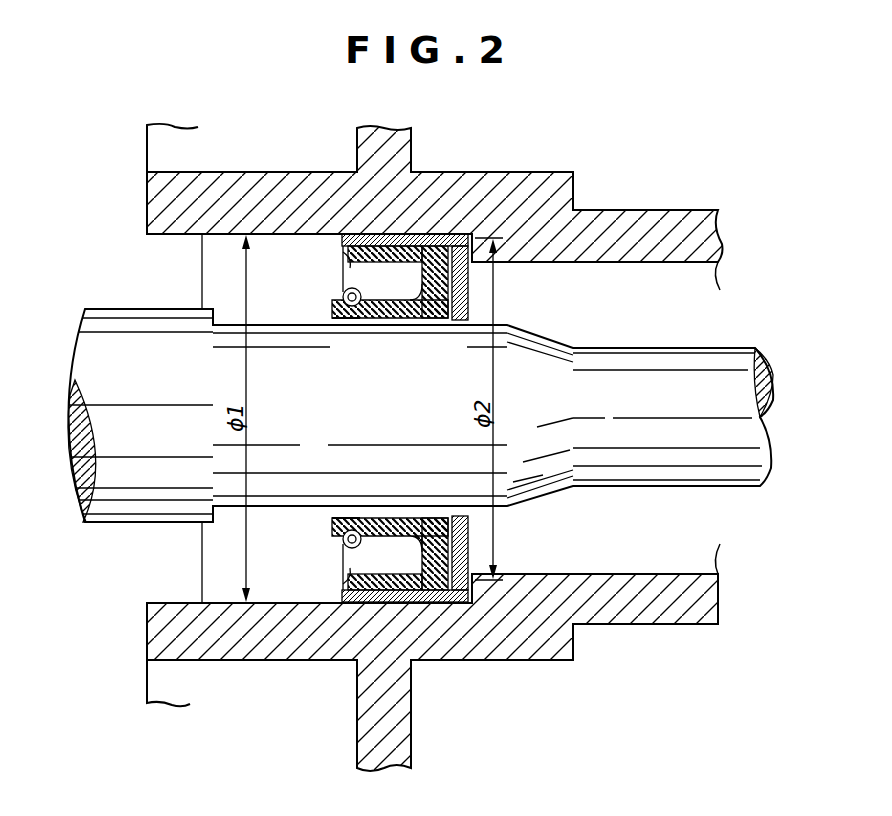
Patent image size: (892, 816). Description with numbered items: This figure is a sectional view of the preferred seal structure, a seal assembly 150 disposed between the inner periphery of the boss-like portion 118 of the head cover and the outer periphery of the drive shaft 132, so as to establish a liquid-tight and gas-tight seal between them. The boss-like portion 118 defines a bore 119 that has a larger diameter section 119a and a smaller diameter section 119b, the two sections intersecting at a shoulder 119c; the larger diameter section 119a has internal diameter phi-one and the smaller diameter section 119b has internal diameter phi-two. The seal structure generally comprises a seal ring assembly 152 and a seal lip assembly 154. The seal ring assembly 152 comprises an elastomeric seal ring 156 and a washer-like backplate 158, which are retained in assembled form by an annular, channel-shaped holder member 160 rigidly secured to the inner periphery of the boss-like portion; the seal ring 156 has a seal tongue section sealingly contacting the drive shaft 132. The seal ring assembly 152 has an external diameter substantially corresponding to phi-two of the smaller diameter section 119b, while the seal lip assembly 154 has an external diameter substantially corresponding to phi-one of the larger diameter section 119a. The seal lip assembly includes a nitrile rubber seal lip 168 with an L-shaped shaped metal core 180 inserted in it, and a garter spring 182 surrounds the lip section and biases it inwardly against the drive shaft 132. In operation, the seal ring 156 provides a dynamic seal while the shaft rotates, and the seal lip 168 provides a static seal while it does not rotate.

The boss-like portion 118 is at (553, 190).
The bore 119 is at (632, 292).
The larger diameter section 119a is at (333, 237).
The smaller diameter section 119b is at (478, 237).
The shoulder 119c is at (418, 233).
The drive shaft 132 is at (540, 497).
The seal assembly 150 is at (432, 200).
The seal ring assembly 152 is at (440, 332).
The seal lip assembly 154 is at (346, 338).
The elastomeric seal ring 156 is at (379, 325).
The backplate 158 is at (468, 291).
The holder member 160 is at (455, 237).
The seal lip 168 is at (338, 312).
The core 180 is at (345, 262).
The garter spring 182 is at (345, 556).